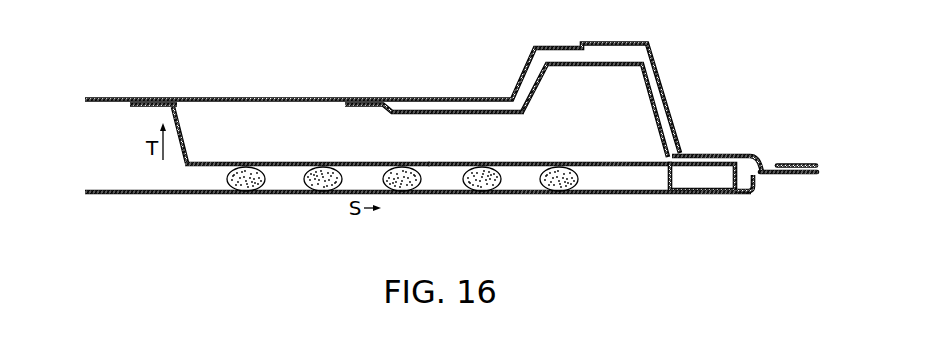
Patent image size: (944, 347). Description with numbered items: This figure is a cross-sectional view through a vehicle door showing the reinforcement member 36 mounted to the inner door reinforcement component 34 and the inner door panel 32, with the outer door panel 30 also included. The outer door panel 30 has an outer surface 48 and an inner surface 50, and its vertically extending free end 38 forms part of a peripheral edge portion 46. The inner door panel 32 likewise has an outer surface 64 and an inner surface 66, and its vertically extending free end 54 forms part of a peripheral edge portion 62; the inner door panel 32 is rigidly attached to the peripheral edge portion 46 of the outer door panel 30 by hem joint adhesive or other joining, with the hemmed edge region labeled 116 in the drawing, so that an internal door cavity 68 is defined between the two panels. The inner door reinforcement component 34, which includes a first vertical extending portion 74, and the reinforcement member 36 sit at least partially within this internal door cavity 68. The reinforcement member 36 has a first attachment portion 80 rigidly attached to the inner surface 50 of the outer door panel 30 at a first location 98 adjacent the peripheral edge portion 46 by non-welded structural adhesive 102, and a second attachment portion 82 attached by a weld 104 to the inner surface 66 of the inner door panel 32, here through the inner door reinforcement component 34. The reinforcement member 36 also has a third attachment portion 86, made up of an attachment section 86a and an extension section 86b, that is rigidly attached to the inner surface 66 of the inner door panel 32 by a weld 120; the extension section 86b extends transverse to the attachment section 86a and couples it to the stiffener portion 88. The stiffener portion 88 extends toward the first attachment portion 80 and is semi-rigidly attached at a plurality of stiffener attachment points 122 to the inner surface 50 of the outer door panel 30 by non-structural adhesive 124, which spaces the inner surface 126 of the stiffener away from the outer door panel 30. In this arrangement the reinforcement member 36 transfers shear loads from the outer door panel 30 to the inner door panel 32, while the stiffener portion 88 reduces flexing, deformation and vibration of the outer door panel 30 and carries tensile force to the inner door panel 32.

The outer door panel 30 is at (150, 200).
The inner door panel 32 is at (218, 94).
The inner door reinforcement component 34 is at (609, 72).
The reinforcement member 36 is at (369, 156).
The vertically extending free end 38 is at (823, 176).
The peripheral edge portion 46 is at (748, 195).
The outer surface 48 is at (532, 197).
The inner surface 50 is at (628, 187).
The vertically extending free end 54 is at (820, 163).
The peripheral edge portion 62 is at (766, 172).
The outer surface 64 is at (291, 97).
The inner surface 66 is at (262, 103).
The internal door cavity 68 is at (133, 166).
The first vertical extending portion 74 is at (753, 155).
The first attachment portion 80 is at (755, 185).
The second attachment portion 82 is at (692, 153).
The third attachment portion 86 is at (135, 115).
The attachment section 86a is at (148, 112).
The extension section 86b is at (183, 131).
The stiffener portion 88 is at (198, 174).
The first location 98 is at (731, 214).
The non-welded structural adhesive 102 is at (688, 197).
The weld 104 is at (717, 156).
The flange 116 is at (793, 162).
The weld 120 is at (146, 102).
The stiffener attachment point 122 is at (250, 192).
The non-structural adhesive 124 is at (241, 182).
The inner surface 126 is at (616, 170).